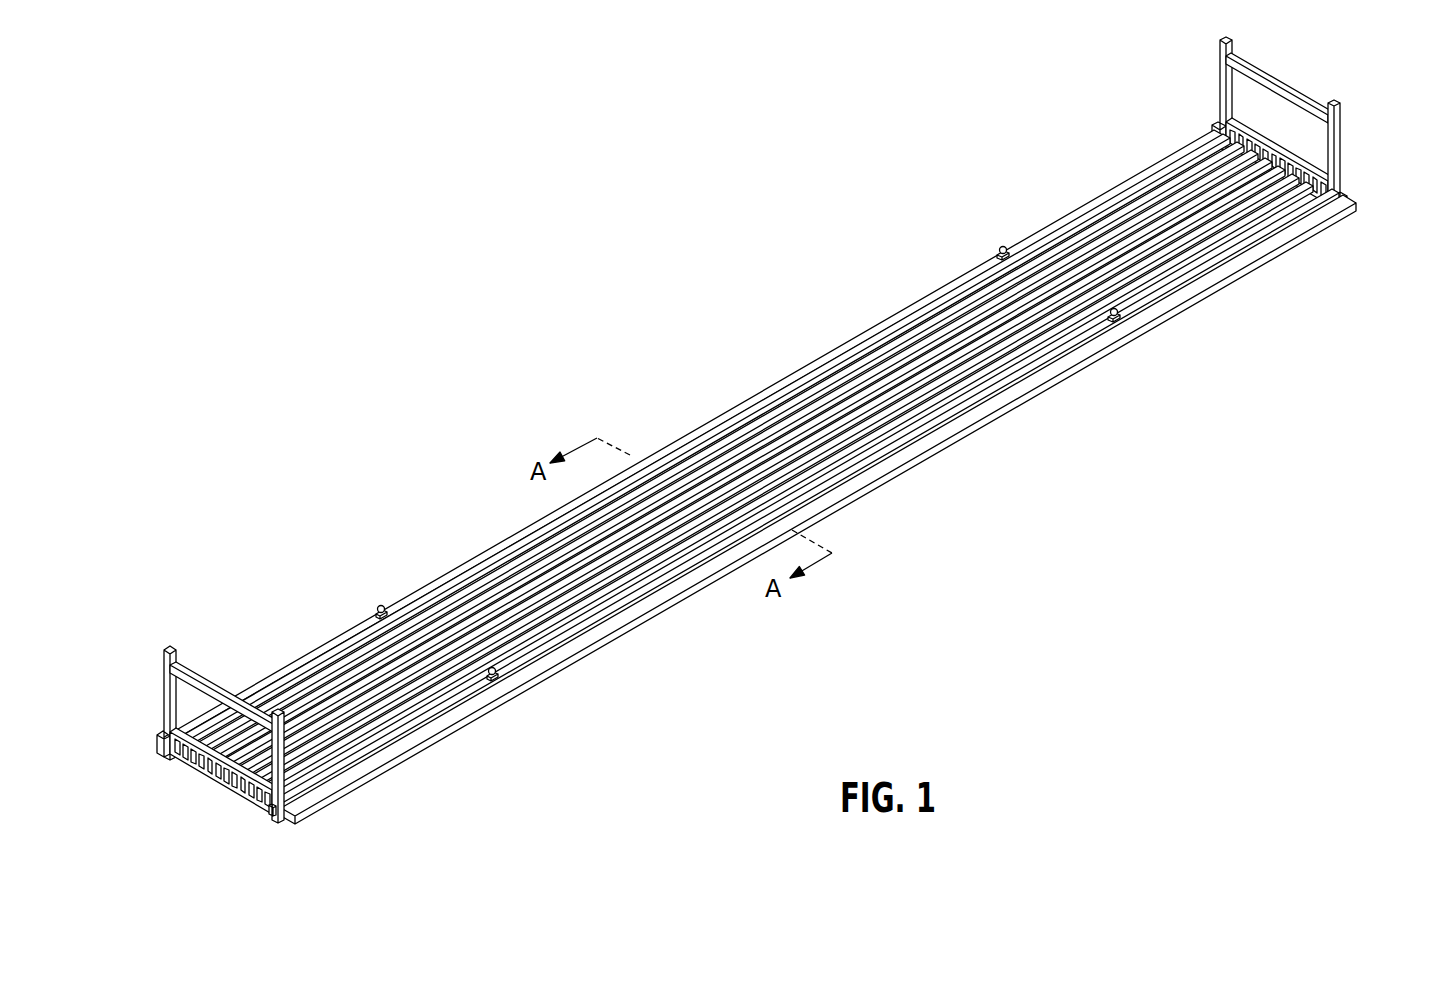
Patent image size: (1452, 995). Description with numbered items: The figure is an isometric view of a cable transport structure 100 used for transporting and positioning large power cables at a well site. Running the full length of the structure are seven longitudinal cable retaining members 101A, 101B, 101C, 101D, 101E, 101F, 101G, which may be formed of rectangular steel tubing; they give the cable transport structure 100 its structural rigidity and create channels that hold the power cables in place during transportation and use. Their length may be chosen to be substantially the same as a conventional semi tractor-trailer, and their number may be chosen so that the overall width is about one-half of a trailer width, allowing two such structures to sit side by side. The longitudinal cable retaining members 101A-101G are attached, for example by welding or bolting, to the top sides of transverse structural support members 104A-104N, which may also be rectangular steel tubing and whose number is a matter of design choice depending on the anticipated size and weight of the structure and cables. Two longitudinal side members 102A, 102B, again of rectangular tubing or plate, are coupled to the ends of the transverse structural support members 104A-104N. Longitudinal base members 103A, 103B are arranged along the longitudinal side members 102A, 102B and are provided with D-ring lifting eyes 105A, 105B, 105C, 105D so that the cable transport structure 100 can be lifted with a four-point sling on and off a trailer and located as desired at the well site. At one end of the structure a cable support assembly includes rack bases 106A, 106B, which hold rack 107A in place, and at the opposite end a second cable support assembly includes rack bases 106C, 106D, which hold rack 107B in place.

The cable transport structure 100 is at (752, 451).
The longitudinal cable retaining member 101A is at (1070, 243).
The longitudinal cable retaining member 101B is at (1088, 242).
The longitudinal cable retaining member 101C is at (1117, 242).
The longitudinal cable retaining member 101D is at (1163, 232).
The longitudinal cable retaining member 101E is at (1212, 215).
The longitudinal cable retaining member 101F is at (1252, 210).
The longitudinal cable retaining member 101G is at (1288, 213).
The longitudinal side member 102A is at (903, 322).
The longitudinal side member 102B is at (986, 402).
The longitudinal base member 103A is at (818, 360).
The longitudinal base member 103B is at (908, 465).
The transverse structural support member 104A is at (215, 774).
The transverse structural support member 104N is at (1322, 172).
The D-ring lifting eye 105A is at (380, 607).
The D-ring lifting eye 105B is at (506, 688).
The D-ring lifting eye 105C is at (1003, 249).
The D-ring lifting eye 105D is at (1127, 327).
The rack base 106A is at (162, 752).
The rack base 106B is at (272, 812).
The rack base 106C is at (1346, 194).
The rack base 106D is at (1219, 132).
The rack 107A is at (216, 690).
The rack 107B is at (1292, 88).